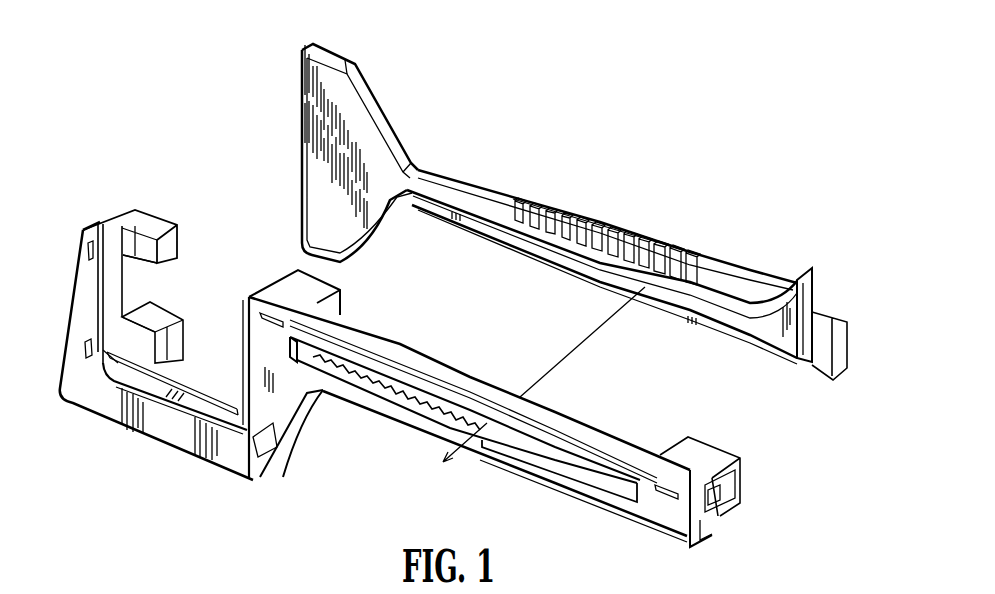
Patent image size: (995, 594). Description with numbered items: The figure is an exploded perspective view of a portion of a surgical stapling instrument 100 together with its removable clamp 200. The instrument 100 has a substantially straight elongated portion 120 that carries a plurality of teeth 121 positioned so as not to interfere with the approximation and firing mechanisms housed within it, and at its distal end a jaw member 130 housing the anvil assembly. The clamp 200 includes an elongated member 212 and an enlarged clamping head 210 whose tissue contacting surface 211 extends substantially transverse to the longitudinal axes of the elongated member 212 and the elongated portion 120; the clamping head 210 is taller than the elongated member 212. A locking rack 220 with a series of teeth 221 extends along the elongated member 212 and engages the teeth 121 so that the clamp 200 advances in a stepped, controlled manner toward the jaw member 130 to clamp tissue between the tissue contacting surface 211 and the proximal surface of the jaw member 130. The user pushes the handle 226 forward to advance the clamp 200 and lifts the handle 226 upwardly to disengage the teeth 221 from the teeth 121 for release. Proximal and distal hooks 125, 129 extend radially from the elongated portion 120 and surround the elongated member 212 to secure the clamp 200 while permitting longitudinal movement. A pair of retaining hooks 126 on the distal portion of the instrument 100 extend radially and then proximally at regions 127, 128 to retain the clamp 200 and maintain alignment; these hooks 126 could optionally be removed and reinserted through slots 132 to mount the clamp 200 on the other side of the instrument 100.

The surgical stapling instrument 100 is at (150, 474).
The elongated portion 120 is at (587, 435).
The teeth 121 is at (403, 395).
The proximal hook 125 is at (705, 455).
The retaining hooks 126 is at (192, 236).
The region of retaining hook 127 is at (150, 264).
The region of retaining hook 128 is at (187, 335).
The distal hook 129 is at (343, 292).
The jaw member 130 is at (80, 273).
The slots 132 is at (90, 228).
The clamp 200 is at (532, 166).
The clamping head 210 is at (360, 112).
The tissue contacting surface 211 is at (302, 112).
The elongated member 212 is at (533, 245).
The locking rack 220 is at (660, 258).
The teeth 221 is at (590, 225).
The handle 226 is at (792, 278).